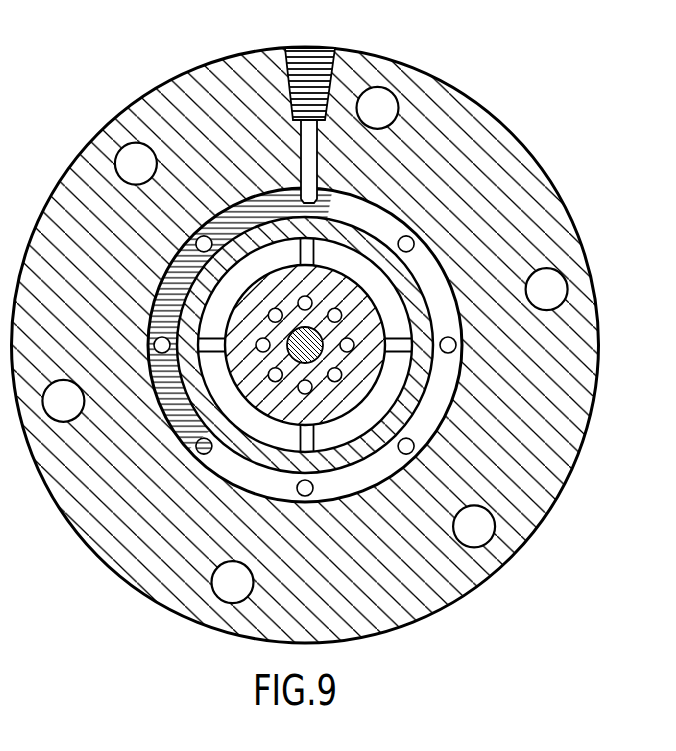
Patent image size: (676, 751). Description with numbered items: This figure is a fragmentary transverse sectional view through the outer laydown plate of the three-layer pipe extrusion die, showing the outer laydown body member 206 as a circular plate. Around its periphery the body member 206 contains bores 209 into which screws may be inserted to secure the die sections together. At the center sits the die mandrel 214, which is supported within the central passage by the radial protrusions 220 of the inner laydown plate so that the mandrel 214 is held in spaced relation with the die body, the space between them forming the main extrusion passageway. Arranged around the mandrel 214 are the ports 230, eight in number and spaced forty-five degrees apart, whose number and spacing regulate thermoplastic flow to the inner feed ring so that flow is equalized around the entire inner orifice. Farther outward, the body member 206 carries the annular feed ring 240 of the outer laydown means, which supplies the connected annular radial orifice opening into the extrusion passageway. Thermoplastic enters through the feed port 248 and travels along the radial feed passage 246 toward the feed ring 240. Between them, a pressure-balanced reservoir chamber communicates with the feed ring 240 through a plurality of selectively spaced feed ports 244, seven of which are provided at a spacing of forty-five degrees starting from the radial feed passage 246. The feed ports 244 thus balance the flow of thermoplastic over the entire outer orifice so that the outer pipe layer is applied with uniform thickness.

The body member 206 is at (535, 535).
The bores 209 is at (387, 117).
The die mandrel 214 is at (265, 408).
The radial protrusions 220 is at (403, 351).
The ports 230 is at (256, 343).
The annular feed ring 240 is at (430, 268).
The feed ports 244 is at (413, 237).
The radial feed passage 246 is at (301, 141).
The feed port 248 is at (321, 53).